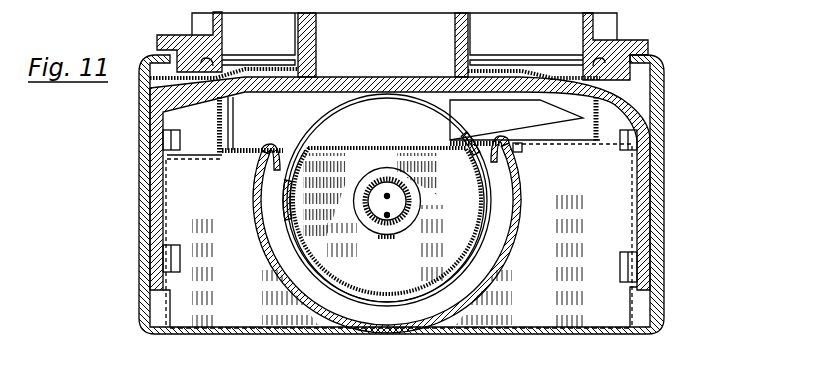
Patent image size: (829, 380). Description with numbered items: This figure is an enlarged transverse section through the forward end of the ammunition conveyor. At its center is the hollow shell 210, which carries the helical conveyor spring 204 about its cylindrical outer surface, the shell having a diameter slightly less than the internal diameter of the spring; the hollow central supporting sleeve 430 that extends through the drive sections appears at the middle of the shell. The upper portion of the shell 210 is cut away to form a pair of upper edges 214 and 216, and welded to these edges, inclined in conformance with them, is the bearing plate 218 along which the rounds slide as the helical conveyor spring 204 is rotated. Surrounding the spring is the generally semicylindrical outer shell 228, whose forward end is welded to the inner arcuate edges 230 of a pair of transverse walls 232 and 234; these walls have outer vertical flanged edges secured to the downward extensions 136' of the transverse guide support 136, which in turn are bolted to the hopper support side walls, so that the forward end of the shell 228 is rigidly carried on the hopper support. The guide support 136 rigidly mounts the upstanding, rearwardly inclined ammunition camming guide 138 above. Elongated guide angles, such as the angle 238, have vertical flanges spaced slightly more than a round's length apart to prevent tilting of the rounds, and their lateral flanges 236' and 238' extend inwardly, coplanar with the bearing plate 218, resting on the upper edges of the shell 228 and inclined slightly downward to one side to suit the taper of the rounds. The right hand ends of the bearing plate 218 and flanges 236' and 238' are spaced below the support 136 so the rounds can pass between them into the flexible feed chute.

The transverse guide support 136 is at (400, 167).
The downward extensions 136' is at (394, 194).
The ammunition camming guide 138 is at (300, 30).
The helical conveyor spring 204 is at (472, 270).
The hollow shell 210 is at (486, 245).
The upper edge 214 is at (303, 147).
The upper edge 216 is at (465, 146).
The bearing plate 218 is at (349, 148).
The semicylindrical shell 228 is at (270, 270).
The inner arcuate edges 230 is at (219, 142).
The transverse wall 232 is at (205, 330).
The transverse wall 234 is at (585, 326).
The lateral flange 236' is at (224, 239).
The elongated angle 238 is at (611, 119).
The lateral flange 238' is at (541, 233).
The central supporting sleeve 430 is at (368, 199).